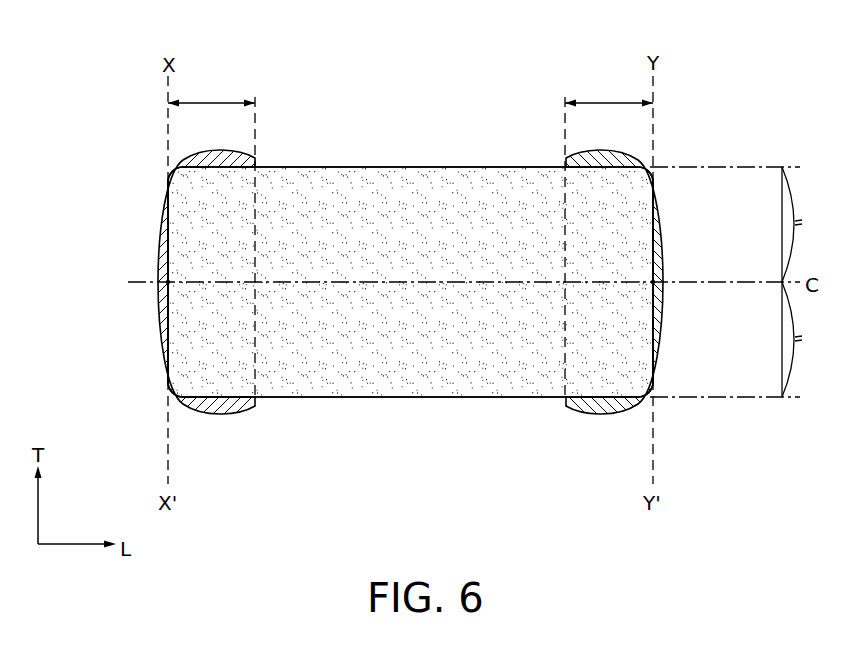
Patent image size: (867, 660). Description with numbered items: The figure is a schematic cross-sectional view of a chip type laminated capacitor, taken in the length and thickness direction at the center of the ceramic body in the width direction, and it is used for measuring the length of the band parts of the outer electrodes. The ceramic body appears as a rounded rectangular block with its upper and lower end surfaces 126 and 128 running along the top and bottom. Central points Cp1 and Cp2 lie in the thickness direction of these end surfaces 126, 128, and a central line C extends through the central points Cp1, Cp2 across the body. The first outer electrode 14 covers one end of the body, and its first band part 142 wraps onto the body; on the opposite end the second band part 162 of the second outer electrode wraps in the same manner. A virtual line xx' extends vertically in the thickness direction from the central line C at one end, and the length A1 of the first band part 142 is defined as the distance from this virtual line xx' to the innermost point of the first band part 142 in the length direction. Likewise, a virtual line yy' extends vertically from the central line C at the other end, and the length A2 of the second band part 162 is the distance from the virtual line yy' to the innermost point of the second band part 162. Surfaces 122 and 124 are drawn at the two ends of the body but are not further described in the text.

The first outer electrode 14 is at (150, 225).
The first band part 142 is at (212, 150).
The second band part 162 is at (607, 150).
The first surface of body 122 is at (171, 364).
The second surface of body 124 is at (650, 364).
The upper end surface 126 is at (427, 167).
The lower end surface 128 is at (437, 397).
The central point Cp1 is at (163, 259).
The central point Cp2 is at (658, 259).
The length of the first band part A1 is at (211, 91).
The length of the second band part A2 is at (609, 91).